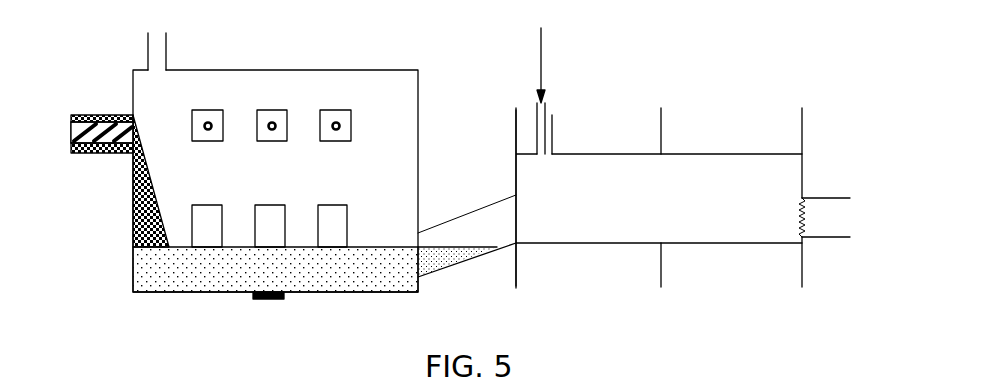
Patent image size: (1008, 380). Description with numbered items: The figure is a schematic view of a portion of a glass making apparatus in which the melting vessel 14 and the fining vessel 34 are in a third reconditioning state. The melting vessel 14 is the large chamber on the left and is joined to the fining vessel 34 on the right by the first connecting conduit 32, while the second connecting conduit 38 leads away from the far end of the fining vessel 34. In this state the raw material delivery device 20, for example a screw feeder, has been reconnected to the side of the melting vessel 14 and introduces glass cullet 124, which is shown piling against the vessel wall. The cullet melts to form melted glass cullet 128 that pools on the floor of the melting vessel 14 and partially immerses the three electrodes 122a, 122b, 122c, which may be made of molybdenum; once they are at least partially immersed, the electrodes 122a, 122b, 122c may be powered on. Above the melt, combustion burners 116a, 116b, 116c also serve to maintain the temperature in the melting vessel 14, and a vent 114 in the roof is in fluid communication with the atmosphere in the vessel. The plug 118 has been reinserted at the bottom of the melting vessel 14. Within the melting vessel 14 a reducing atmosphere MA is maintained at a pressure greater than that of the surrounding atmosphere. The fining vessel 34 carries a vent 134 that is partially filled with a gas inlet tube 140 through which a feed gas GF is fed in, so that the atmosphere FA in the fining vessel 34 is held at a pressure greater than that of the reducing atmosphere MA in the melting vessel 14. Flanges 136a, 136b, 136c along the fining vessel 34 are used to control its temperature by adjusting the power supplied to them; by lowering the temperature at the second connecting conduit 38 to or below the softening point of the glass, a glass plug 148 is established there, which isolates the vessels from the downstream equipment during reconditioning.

The melting vessel 14 is at (418, 113).
The raw material delivery device 20 is at (95, 153).
The first connecting conduit 32 is at (463, 262).
The fining vessel 34 is at (648, 244).
The second connecting conduit 38 is at (820, 198).
The vent 114 is at (166, 50).
The combustion burner 116a is at (208, 110).
The combustion burner 116b is at (272, 110).
The combustion burner 116c is at (336, 110).
The plug 118 is at (270, 299).
The electrode 122a is at (207, 205).
The electrode 122b is at (270, 205).
The electrode 122c is at (333, 205).
The glass cullet 124 is at (146, 163).
The melted glass cullet 128 is at (132, 268).
The vent 134 is at (552, 140).
The flange 136a is at (516, 122).
The flange 136b is at (661, 113).
The flange 136c is at (802, 113).
The gas inlet tube 140 is at (545, 108).
The glass plug 148 is at (803, 210).
The feed gas GF is at (541, 60).
The reducing atmosphere MA is at (273, 153).
The atmosphere FA is at (665, 196).